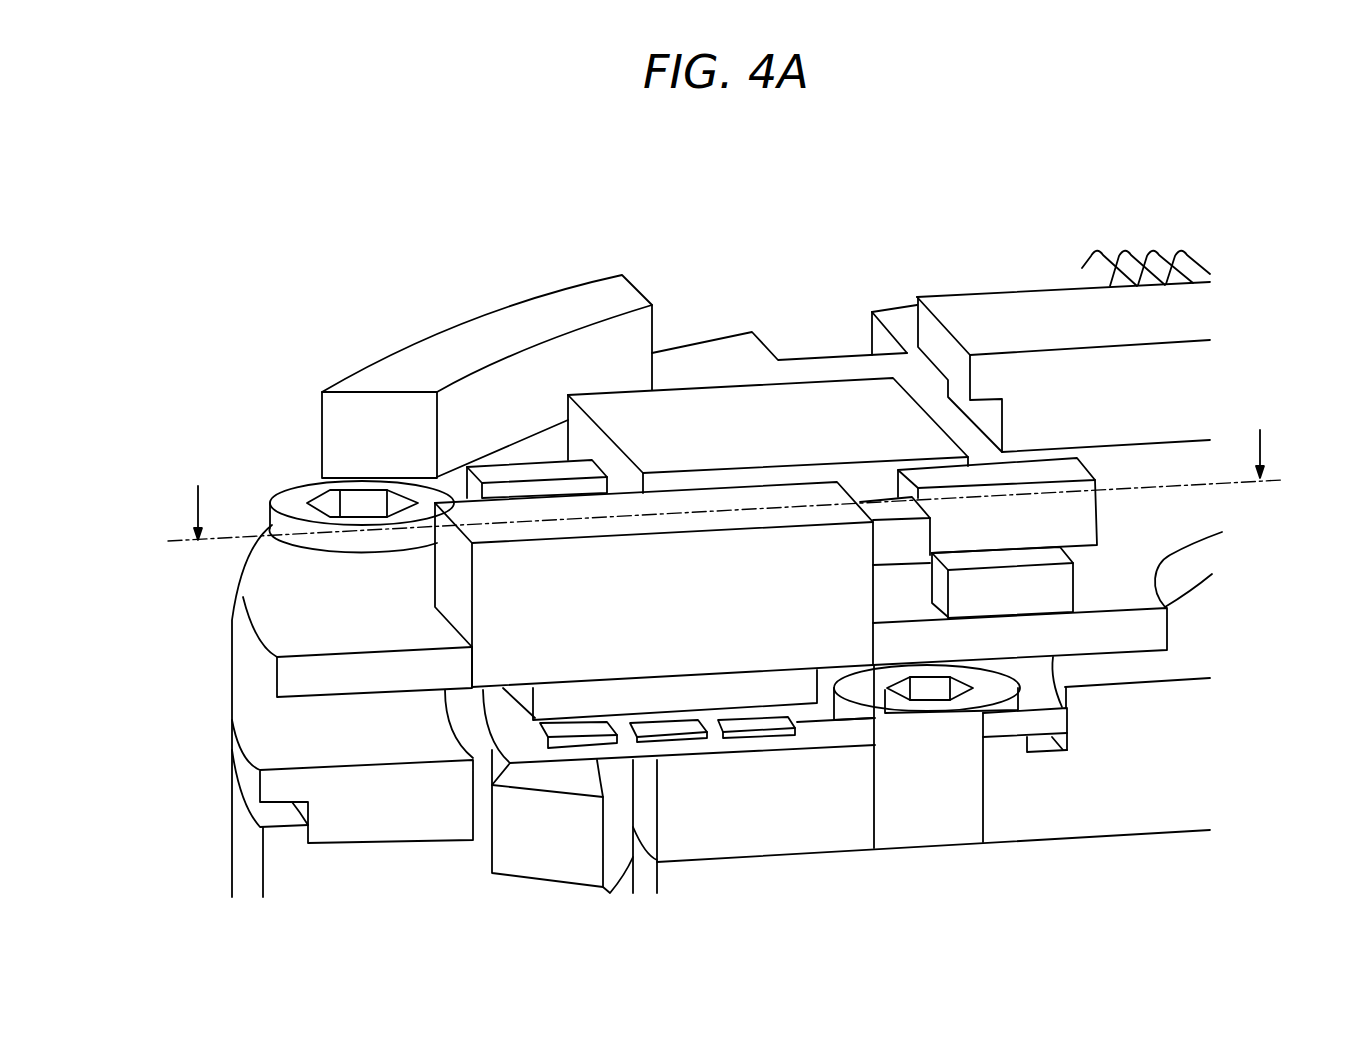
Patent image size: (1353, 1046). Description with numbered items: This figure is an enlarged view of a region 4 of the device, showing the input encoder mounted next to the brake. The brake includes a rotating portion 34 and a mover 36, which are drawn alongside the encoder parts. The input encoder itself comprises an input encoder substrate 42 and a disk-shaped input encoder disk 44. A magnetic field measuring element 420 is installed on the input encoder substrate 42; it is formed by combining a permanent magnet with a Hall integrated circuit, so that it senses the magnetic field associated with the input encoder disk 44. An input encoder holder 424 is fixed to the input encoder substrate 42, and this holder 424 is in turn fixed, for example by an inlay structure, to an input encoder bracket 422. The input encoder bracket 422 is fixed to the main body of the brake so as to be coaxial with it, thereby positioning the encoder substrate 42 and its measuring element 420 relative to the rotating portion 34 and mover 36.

The region 4 is at (920, 200).
The rotating portion 34 is at (1135, 762).
The mover 36 is at (772, 870).
The input encoder substrate 42 is at (242, 616).
The input encoder disk 44 is at (1040, 690).
The magnetic field measuring element 420 is at (695, 505).
The input encoder bracket 422 is at (247, 825).
The input encoder holder 424 is at (475, 332).